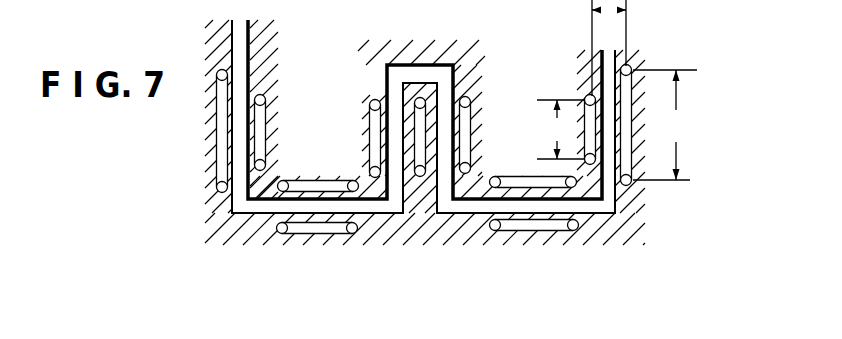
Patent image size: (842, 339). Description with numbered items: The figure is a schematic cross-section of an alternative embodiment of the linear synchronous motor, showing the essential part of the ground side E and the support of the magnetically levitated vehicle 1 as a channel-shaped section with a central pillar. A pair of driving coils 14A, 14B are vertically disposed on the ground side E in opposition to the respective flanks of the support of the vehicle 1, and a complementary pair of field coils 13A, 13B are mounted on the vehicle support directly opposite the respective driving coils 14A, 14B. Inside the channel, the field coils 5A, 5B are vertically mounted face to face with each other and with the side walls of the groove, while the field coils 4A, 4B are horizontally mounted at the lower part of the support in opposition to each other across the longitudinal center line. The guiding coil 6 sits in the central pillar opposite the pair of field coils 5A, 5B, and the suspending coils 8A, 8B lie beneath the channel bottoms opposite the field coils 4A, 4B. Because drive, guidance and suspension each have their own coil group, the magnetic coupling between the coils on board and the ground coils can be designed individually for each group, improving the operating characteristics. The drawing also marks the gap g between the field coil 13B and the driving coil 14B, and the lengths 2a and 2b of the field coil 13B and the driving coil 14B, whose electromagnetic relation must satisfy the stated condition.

The magnetically levitated vehicle 1 is at (428, 28).
The ground side E is at (418, 269).
The driving coil 14A is at (218, 128).
The driving coil 14B is at (628, 183).
The field coil 13A is at (270, 118).
The field coil 13B is at (592, 166).
The field coil 5A is at (378, 142).
The field coil 5B is at (471, 142).
The field coil 4A is at (315, 182).
The field coil 4B is at (534, 179).
The guiding coil 6 is at (424, 98).
The suspending coil 8A is at (316, 234).
The suspending coil 8B is at (537, 231).
The gap width g is at (609, 48).
The conductor length 2a is at (560, 129).
The conductor length 2b is at (665, 125).